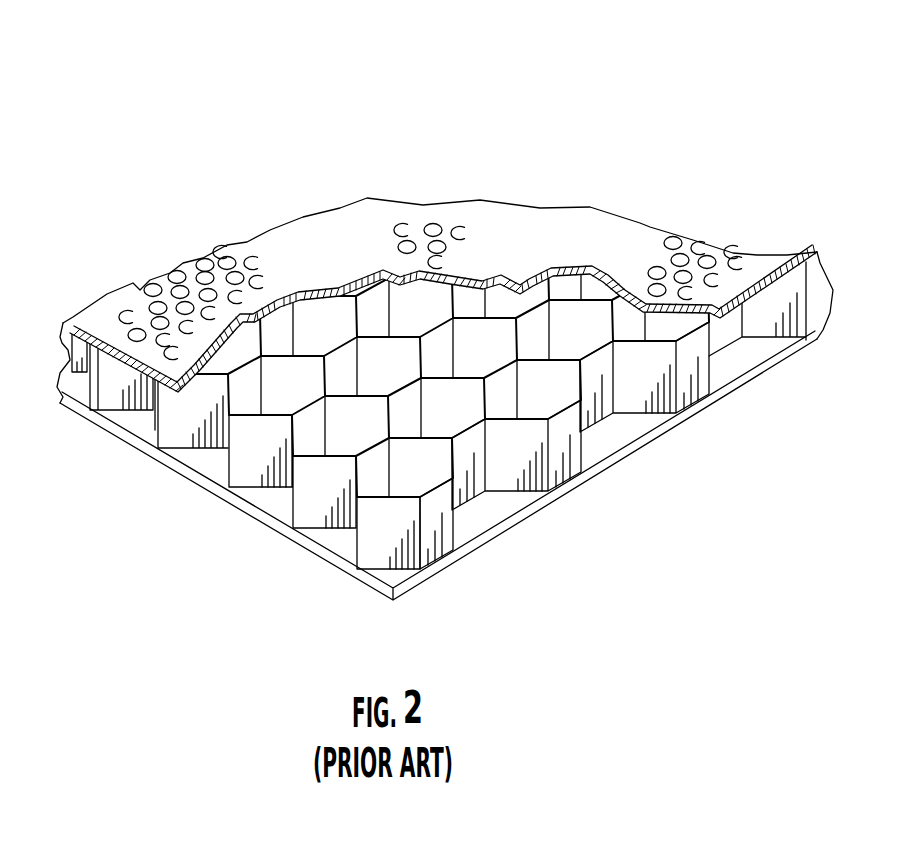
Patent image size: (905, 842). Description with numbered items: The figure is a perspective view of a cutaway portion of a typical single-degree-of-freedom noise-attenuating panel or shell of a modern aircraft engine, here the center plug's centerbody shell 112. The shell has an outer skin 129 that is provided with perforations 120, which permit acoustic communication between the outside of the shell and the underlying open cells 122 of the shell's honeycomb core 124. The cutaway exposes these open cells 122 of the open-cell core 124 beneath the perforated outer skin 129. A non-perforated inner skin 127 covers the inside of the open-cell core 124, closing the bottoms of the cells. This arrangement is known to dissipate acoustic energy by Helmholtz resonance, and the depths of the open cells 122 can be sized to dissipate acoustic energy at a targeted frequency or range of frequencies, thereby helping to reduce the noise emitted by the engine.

The centerbody shell 112 is at (184, 117).
The perforations 120 is at (238, 268).
The open cells 122 is at (343, 432).
The honeycomb core 124 is at (383, 535).
The inner skin 127 is at (656, 443).
The outer skin 129 is at (763, 263).